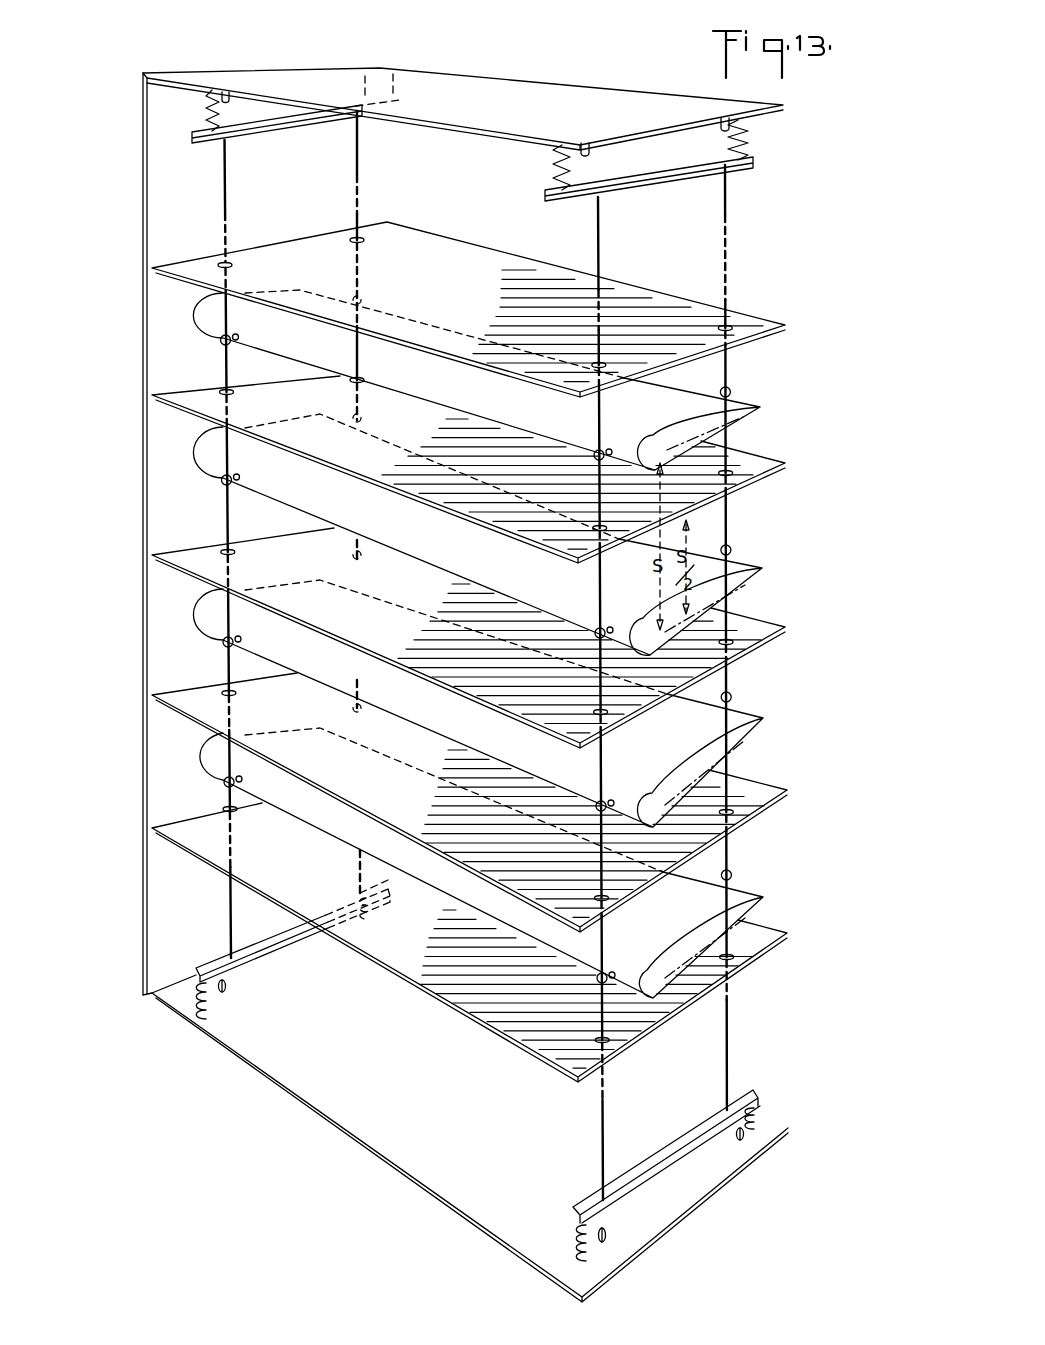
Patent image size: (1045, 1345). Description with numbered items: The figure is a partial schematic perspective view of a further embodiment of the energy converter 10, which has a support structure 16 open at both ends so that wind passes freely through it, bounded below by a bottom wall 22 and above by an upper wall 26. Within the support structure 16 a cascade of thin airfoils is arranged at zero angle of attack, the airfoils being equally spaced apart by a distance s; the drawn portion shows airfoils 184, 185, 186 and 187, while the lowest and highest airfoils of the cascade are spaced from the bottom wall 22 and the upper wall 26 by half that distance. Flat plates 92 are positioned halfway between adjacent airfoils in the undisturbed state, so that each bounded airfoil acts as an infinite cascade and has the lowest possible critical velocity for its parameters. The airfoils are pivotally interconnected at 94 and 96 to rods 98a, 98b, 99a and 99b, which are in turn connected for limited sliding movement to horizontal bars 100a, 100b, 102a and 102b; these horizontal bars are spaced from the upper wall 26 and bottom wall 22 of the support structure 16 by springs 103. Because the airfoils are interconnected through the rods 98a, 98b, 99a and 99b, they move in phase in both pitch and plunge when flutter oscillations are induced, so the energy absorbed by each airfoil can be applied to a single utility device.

The energy converter 10 is at (789, 253).
The support structure 16 is at (142, 214).
The bottom wall 22 is at (362, 1132).
The upper wall 26 is at (536, 90).
The airfoil 187 is at (760, 433).
The airfoil 186 is at (758, 592).
The airfoil 185 is at (745, 748).
The airfoil 184 is at (762, 900).
The flat plate 92 is at (622, 1052).
The pivotal interconnection 94 is at (592, 985).
The pivotal interconnection 96 is at (735, 877).
The rod 98a is at (602, 1132).
The rod 98b is at (232, 933).
The rod 99a is at (742, 1030).
The rod 99b is at (362, 155).
The horizontal bar 100a is at (670, 1145).
The horizontal bar 100b is at (278, 943).
The horizontal bar 102a is at (649, 185).
The horizontal bar 102b is at (262, 136).
The spring 103 is at (577, 1238).